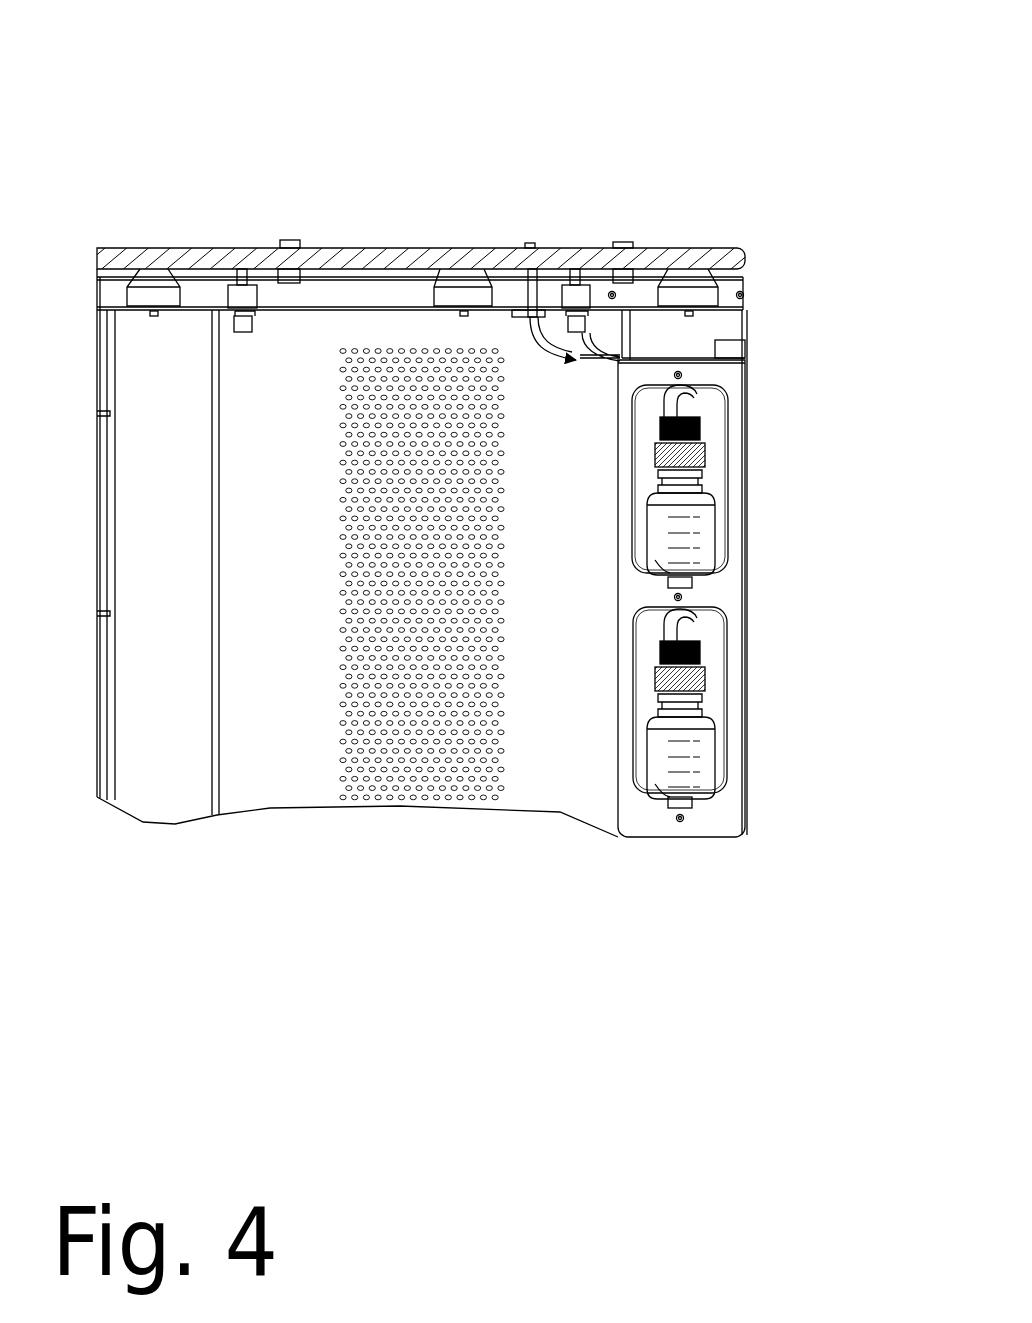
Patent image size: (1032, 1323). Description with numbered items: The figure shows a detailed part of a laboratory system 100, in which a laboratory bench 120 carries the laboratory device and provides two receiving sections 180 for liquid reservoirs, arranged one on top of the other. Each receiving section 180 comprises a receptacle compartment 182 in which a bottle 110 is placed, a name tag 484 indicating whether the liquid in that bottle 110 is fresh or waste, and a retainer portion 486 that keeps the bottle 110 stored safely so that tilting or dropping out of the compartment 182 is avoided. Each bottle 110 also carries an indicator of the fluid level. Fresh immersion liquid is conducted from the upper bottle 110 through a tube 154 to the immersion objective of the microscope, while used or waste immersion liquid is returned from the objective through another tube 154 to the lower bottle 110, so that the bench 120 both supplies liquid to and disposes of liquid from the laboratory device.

The laboratory system 100 is at (718, 102).
The liquid reservoir 110 is at (687, 538).
The laboratory bench 120 is at (707, 323).
The tube 154 is at (690, 392).
The receiving section 180 is at (709, 442).
The receptacle compartment 182 is at (717, 487).
The name tag 484 is at (670, 590).
The retainer portion 486 is at (670, 572).